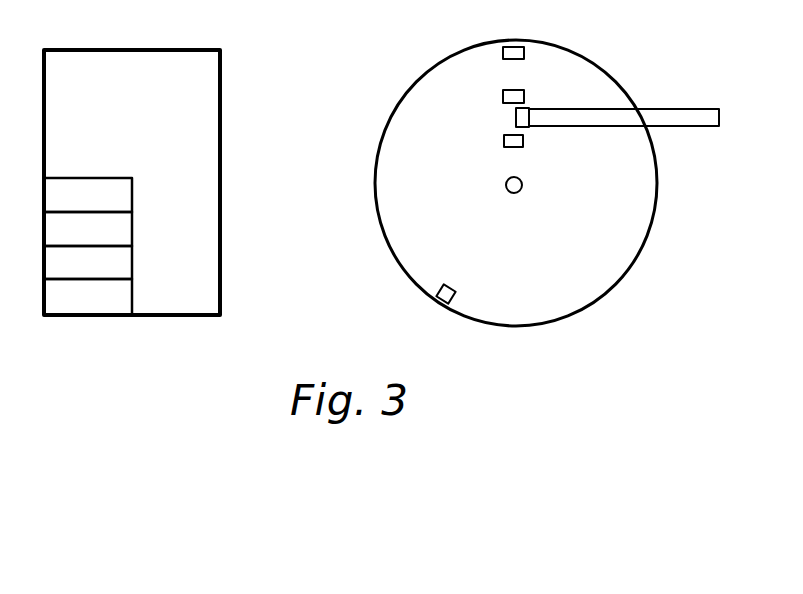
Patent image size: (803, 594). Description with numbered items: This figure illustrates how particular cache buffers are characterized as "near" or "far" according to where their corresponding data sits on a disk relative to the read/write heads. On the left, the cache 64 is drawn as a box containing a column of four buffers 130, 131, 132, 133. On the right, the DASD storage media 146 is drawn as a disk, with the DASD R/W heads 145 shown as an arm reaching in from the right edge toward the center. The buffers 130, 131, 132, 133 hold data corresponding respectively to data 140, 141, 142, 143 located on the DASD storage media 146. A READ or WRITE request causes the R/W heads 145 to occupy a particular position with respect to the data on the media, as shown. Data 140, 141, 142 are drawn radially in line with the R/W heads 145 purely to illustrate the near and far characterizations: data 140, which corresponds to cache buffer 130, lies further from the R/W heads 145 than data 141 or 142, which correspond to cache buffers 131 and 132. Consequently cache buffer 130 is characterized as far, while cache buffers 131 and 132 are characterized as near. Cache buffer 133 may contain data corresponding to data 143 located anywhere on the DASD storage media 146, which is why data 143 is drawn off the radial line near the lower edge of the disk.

The cache 64 is at (208, 124).
The cache buffer 130 is at (88, 195).
The cache buffer 131 is at (88, 229).
The cache buffer 132 is at (88, 262).
The cache buffer 133 is at (88, 297).
The data 140 is at (514, 46).
The data 141 is at (514, 89).
The data 142 is at (512, 147).
The data 143 is at (449, 288).
The DASD R/W heads 145 is at (516, 117).
The DASD storage media 146 is at (538, 312).